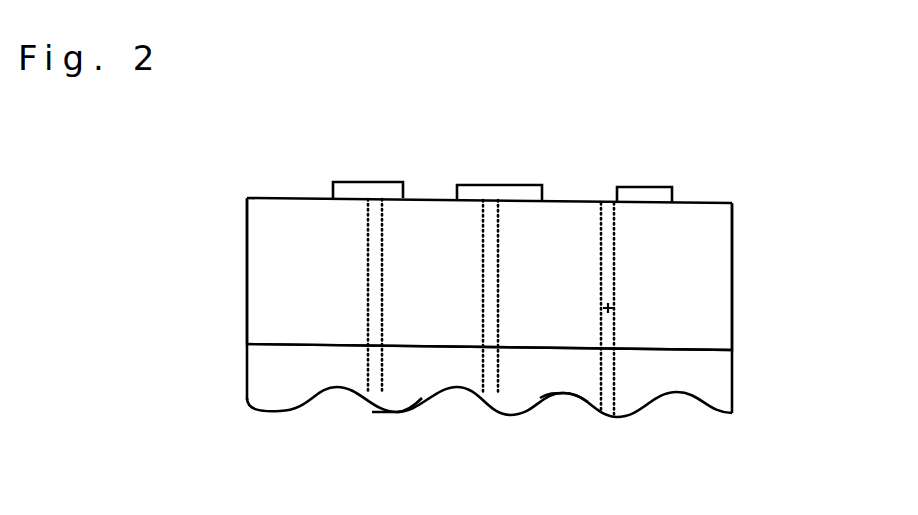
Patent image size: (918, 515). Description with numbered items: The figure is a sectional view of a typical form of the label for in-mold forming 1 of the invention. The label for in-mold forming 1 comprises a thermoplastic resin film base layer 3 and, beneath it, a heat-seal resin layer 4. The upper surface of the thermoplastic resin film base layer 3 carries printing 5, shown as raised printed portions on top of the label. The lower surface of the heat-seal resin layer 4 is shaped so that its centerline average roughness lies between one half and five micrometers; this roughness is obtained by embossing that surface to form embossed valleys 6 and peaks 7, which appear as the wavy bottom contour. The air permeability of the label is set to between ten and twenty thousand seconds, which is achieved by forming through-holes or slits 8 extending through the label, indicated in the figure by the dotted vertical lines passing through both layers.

The label for in-mold forming 1 is at (751, 217).
The thermoplastic resin film base layer 3 is at (247, 250).
The heat-seal resin layer 4 is at (732, 375).
The printing 5 is at (651, 190).
The embossed valleys 6 is at (572, 396).
The embossed peaks 7 is at (403, 412).
The through-holes or slits 8 is at (608, 308).